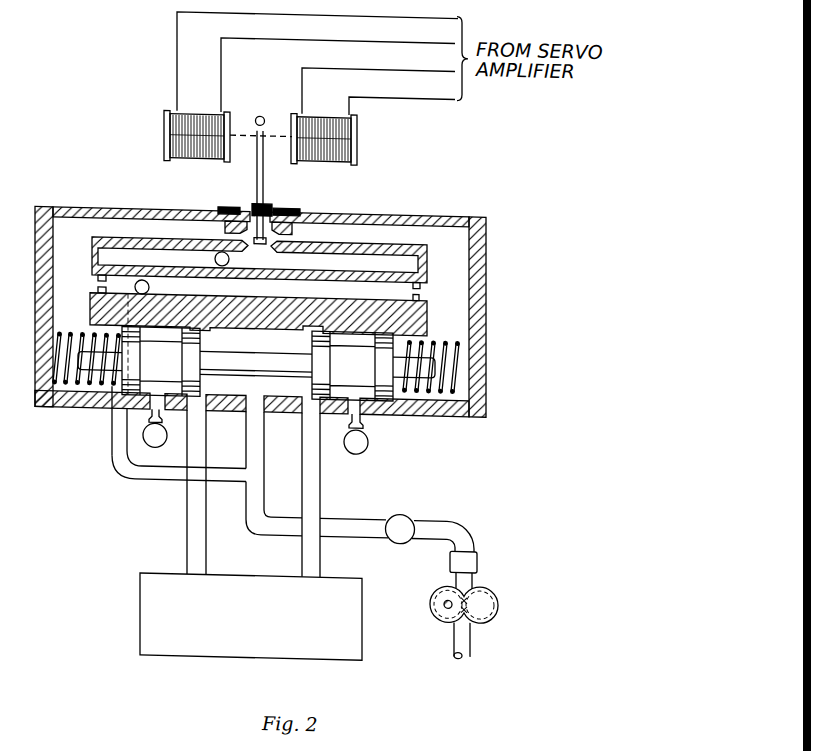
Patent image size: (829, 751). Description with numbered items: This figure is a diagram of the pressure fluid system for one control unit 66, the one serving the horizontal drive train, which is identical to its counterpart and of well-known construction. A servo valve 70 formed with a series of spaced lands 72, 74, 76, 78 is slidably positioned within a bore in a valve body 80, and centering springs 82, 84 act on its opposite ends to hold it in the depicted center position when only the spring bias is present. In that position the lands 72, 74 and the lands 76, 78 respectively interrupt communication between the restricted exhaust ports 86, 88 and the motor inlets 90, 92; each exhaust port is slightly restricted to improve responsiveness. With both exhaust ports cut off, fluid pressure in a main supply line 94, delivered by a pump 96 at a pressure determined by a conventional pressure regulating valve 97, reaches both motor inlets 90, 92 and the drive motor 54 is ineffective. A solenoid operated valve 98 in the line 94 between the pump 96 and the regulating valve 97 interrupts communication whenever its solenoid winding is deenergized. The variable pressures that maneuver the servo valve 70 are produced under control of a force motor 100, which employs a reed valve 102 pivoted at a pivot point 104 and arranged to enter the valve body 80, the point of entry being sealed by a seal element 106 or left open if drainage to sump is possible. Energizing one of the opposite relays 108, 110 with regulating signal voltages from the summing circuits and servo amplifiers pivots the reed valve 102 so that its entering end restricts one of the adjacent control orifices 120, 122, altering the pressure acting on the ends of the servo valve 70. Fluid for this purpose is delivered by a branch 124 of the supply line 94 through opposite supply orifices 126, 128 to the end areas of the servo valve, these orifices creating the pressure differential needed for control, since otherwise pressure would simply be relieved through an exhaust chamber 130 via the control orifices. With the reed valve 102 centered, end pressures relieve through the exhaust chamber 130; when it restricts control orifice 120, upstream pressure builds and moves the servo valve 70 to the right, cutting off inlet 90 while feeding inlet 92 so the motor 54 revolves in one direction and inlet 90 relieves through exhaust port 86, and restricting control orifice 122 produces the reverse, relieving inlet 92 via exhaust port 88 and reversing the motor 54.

The horizontal drive motor 54 is at (363, 642).
The control unit 66 is at (487, 266).
The servo valve 70 is at (415, 404).
The land 72 is at (113, 394).
The land 74 is at (222, 408).
The land 76 is at (347, 418).
The land 78 is at (383, 406).
The valve body 80 is at (437, 212).
The centering spring 82 is at (82, 394).
The centering spring 84 is at (464, 336).
The restricted exhaust port 86 is at (154, 446).
The restricted exhaust port 88 is at (357, 448).
The motor inlet 90 is at (187, 518).
The motor inlet 92 is at (321, 522).
The main supply line 94 is at (250, 515).
The pump 96 is at (496, 593).
The pressure regulating valve 97 is at (405, 508).
The solenoid operated valve 98 is at (480, 552).
The force motor 100 is at (265, 127).
The reed valve 102 is at (257, 178).
The pivot point 104 is at (259, 112).
The seal element 106 is at (283, 216).
The relay 108 is at (166, 146).
The relay 110 is at (352, 159).
The control orifice 120 is at (245, 213).
The control orifice 122 is at (315, 236).
The branch 124 is at (173, 468).
The supply orifice 126 is at (98, 284).
The supply orifice 128 is at (428, 281).
The exhaust chamber 130 is at (221, 249).